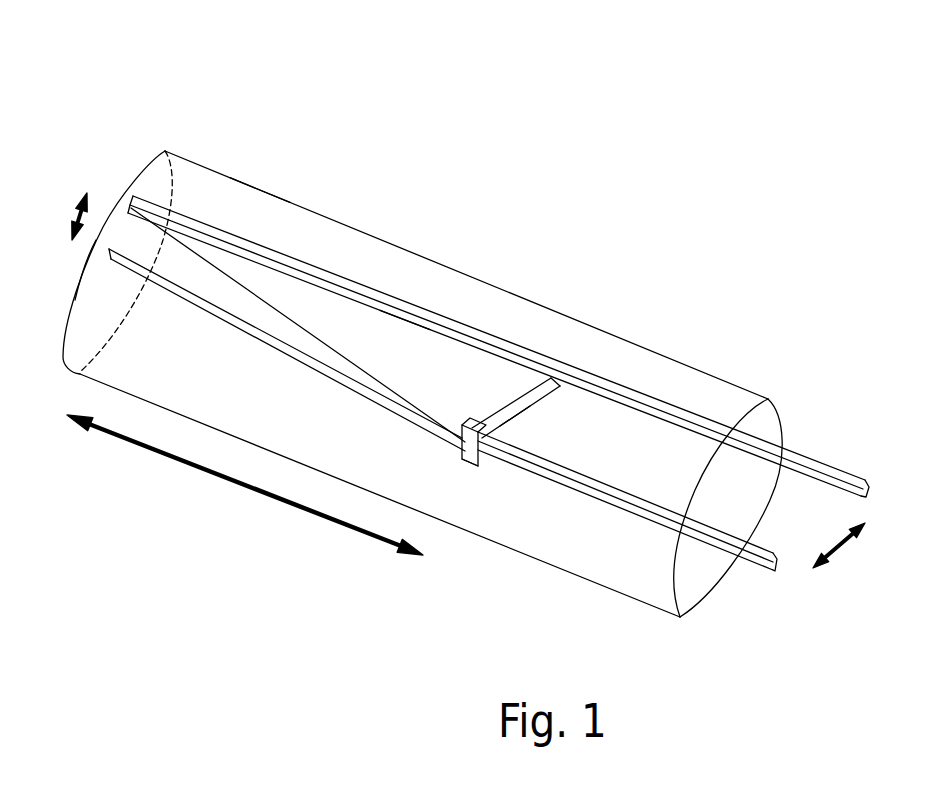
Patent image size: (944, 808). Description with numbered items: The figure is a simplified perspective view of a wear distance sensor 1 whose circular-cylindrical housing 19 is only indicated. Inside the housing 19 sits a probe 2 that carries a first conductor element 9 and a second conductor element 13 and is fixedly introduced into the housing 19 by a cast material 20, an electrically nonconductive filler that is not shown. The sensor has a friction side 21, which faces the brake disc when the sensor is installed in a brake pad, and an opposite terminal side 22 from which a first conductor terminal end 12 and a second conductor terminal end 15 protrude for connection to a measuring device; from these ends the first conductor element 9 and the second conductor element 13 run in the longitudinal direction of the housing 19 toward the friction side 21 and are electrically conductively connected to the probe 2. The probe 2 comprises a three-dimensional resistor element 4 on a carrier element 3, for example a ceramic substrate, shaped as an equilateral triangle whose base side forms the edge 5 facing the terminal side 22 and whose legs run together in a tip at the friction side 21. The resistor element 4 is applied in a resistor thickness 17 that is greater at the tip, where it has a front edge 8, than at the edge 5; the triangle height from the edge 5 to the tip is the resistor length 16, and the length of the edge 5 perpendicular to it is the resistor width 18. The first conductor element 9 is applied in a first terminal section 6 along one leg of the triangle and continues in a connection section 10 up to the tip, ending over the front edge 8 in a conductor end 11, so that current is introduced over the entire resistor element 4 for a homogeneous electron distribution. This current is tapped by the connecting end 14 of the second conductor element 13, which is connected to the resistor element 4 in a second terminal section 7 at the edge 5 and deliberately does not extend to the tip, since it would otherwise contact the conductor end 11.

The wear distance sensor 1 is at (474, 172).
The probe 2 is at (389, 268).
The carrier element 3 is at (333, 378).
The resistor element 4 is at (302, 300).
The edge 5 is at (537, 372).
The first terminal section 6 is at (407, 331).
The second terminal section 7 is at (462, 400).
The front edge 8 is at (90, 264).
The first conductor element 9 is at (659, 398).
The connection section 10 is at (516, 412).
The conductor end 11 is at (168, 148).
The first conductor terminal end 12 is at (860, 473).
The second conductor element 13 is at (573, 483).
The connecting end 14 is at (478, 458).
The second conductor terminal end 15 is at (778, 571).
The resistor length 16 is at (177, 463).
The resistor thickness 17 is at (74, 214).
The resistor width 18 is at (843, 548).
The housing 19 is at (234, 178).
The cast material 20 is at (252, 204).
The friction side 21 is at (132, 175).
The terminal side 22 is at (707, 600).